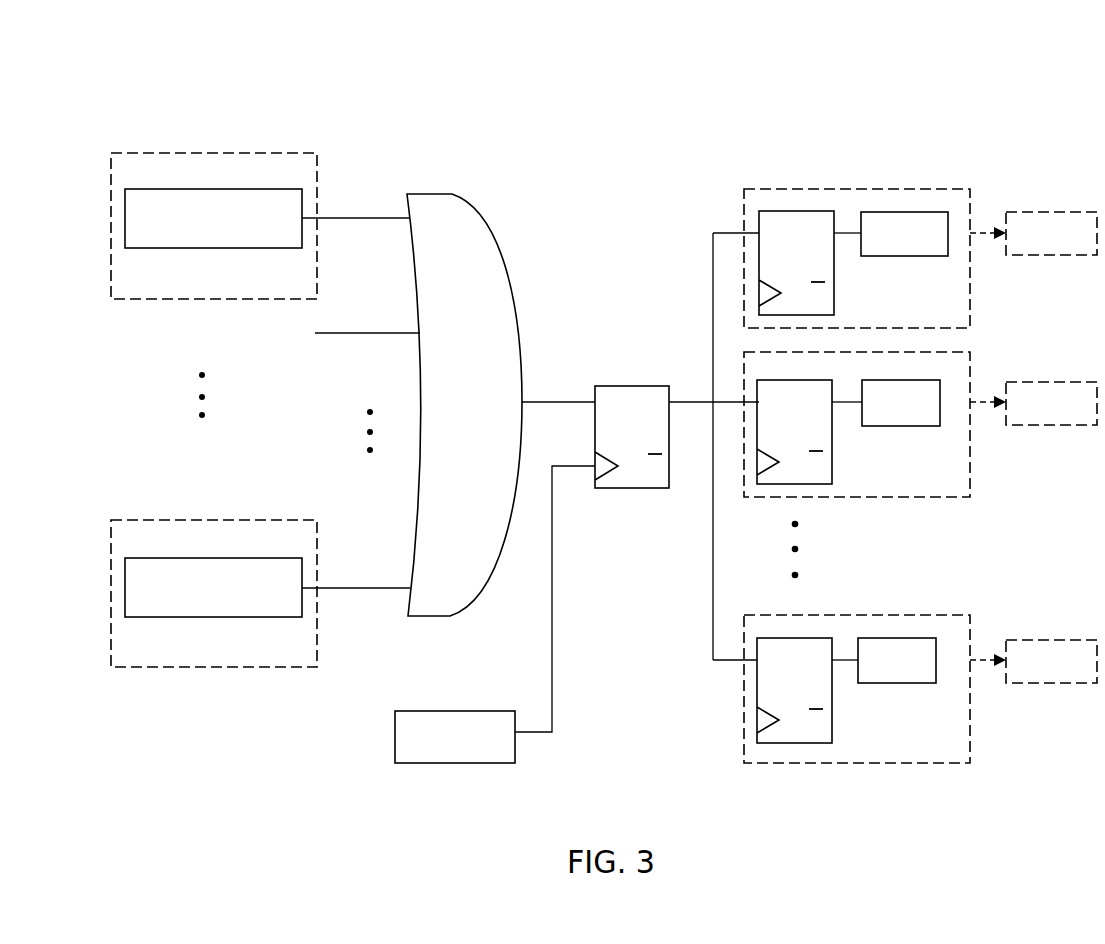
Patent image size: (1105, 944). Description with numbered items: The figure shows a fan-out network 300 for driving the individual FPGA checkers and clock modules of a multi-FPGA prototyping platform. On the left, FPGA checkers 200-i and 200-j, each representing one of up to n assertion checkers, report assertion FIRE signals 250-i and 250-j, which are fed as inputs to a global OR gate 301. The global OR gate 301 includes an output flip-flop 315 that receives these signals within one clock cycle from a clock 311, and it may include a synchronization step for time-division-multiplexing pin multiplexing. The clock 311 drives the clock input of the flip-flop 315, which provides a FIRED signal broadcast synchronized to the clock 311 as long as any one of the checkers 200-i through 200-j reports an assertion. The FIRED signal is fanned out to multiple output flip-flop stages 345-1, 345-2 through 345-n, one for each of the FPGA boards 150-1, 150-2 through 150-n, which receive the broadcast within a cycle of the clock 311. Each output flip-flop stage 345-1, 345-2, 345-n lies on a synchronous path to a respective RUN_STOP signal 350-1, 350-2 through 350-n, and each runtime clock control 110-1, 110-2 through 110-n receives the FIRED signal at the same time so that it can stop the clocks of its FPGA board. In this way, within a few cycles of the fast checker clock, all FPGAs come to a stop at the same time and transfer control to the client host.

The fan-out network 300 is at (860, 88).
The FPGA checker 200-i is at (186, 283).
The assertion FIRE signal 250-i is at (183, 233).
The FPGA checker 200-j is at (186, 662).
The assertion FIRE signal 250-j is at (183, 603).
The global OR gate 301 is at (454, 419).
The output flip-flop 315 is at (636, 386).
The clock 311 is at (433, 750).
The FPGA board 150-1 is at (935, 313).
The output flip-flop stage 345-1 is at (766, 277).
The RUN_STOP signal 350-1 is at (870, 250).
The runtime clock control 110-1 is at (1018, 248).
The FPGA board 150-2 is at (866, 477).
The output flip-flop stage 345-2 is at (762, 445).
The RUN_STOP signal 350-2 is at (867, 417).
The runtime clock control 110-2 is at (1018, 417).
The FPGA board 150-n is at (864, 737).
The output flip-flop stage 345-n is at (762, 703).
The RUN_STOP signal 350-n is at (862, 673).
The runtime clock control 110-n is at (1018, 675).